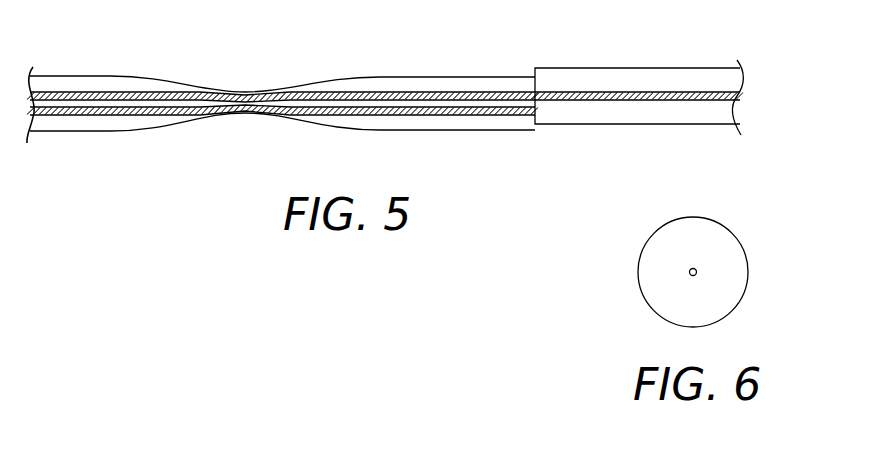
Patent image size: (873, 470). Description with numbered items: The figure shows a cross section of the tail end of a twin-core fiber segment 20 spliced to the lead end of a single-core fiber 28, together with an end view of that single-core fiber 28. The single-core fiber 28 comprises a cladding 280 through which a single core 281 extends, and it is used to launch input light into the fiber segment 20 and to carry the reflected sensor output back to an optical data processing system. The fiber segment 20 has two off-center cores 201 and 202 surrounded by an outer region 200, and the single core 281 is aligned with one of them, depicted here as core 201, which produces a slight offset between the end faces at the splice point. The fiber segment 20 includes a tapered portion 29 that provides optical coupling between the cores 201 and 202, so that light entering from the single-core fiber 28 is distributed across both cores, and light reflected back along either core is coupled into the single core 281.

In FIG. 5, the twin-core fiber segment 20 is at (282, 88).
In FIG. 5, the tapered portion 29 is at (246, 80).
In FIG. 5, the outer sheath 200 is at (421, 86).
In FIG. 5, the core 201 is at (449, 97).
In FIG. 5, the core 202 is at (455, 112).
In FIG. 5, the single-core fiber 28 is at (660, 79).
In FIG. 6, the single-core fiber 28 is at (693, 260).
In FIG. 5, the cladding 280 is at (742, 72).
In FIG. 6, the cladding 280 is at (679, 257).
In FIG. 5, the core 281 is at (741, 96).
In FIG. 6, the core 281 is at (696, 271).